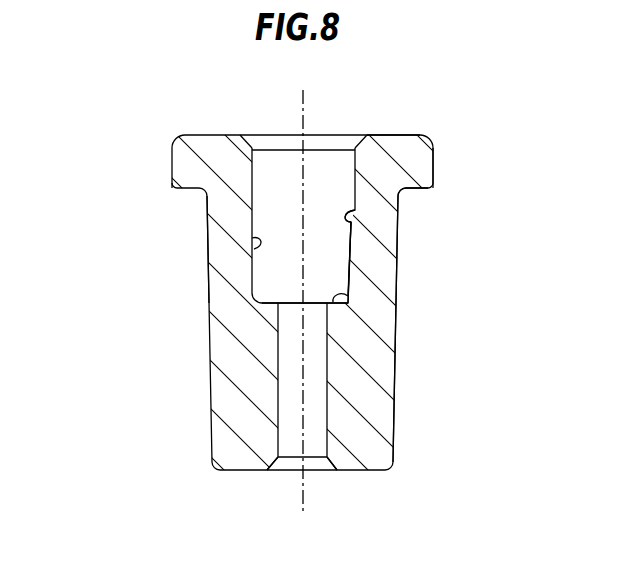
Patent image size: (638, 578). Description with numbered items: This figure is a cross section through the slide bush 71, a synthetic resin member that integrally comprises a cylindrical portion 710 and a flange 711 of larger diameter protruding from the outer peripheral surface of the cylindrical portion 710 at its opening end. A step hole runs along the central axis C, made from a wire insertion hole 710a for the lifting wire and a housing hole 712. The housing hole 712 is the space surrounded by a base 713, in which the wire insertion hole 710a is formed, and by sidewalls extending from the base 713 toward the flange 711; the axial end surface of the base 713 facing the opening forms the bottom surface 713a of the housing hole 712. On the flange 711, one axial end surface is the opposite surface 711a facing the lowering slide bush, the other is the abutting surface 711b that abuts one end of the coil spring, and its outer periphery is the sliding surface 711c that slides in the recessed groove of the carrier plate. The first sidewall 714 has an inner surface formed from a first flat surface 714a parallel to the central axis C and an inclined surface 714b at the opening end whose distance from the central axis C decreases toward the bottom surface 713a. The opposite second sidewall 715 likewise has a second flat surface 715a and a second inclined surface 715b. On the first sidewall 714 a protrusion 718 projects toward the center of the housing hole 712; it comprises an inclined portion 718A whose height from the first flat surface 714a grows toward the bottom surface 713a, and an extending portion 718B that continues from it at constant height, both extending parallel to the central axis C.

The slide bush 71 is at (78, 93).
The flange 711 is at (150, 136).
The cylindrical portion 710 is at (182, 207).
The housing hole 712 is at (324, 110).
The second inclined surface 715b is at (252, 135).
The inclined surface 714b is at (355, 135).
The opposite surface 711a is at (407, 135).
The sliding surface 711c is at (433, 163).
The abutting surface 711b is at (408, 190).
The first sidewall 714 is at (367, 202).
The first flat surface 714a is at (350, 214).
The inclined portion 718A is at (352, 248).
The extending portion 718B is at (349, 294).
The protrusion 718 is at (490, 255).
The second sidewall 715 is at (233, 220).
The second flat surface 715a is at (256, 248).
The base 713 is at (257, 318).
The bottom surface 713a is at (348, 304).
The wire insertion hole 710a is at (284, 467).
The central axis C is at (303, 500).